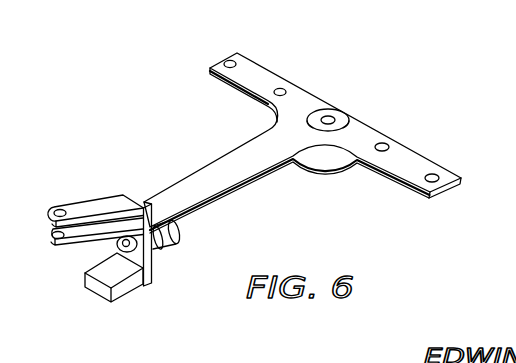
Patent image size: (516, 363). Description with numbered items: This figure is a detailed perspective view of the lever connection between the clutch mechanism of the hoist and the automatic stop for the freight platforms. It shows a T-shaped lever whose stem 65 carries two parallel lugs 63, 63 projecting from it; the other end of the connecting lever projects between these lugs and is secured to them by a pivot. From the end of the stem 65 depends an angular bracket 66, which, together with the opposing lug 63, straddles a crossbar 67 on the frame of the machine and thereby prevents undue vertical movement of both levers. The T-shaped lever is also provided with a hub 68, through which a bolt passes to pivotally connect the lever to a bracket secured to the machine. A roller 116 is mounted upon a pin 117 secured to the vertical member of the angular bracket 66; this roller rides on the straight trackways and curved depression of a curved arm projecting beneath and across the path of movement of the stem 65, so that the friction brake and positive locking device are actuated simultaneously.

The lug 63 is at (93, 207).
The stem of the T-shaped lever 65 is at (215, 177).
The angular bracket 66 is at (143, 277).
The crossbar 67 is at (284, 90).
The hub 68 is at (342, 114).
The roller 116 is at (171, 241).
The pin 117 is at (128, 251).